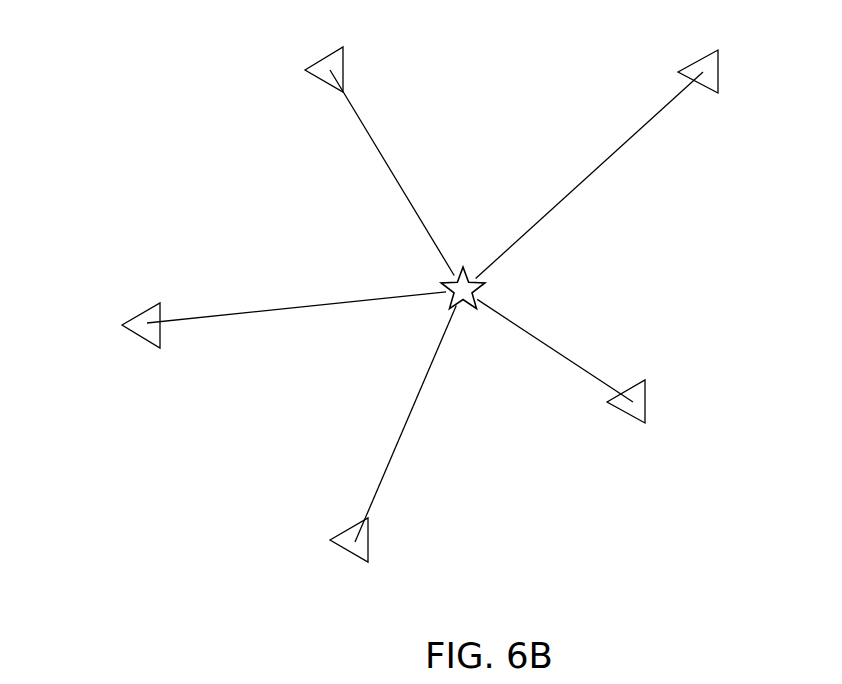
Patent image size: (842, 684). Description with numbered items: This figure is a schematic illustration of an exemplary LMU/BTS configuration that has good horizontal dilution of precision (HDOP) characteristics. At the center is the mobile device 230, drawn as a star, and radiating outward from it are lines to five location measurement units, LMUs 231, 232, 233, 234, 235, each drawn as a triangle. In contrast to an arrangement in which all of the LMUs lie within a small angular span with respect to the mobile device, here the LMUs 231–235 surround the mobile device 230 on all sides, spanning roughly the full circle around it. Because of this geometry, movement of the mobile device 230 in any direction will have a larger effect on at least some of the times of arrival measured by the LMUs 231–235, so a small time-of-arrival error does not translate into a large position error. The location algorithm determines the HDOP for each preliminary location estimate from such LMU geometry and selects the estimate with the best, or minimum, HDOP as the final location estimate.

The mobile device 230 is at (446, 282).
The LMU 231 is at (645, 423).
The LMU 232 is at (718, 50).
The LMU 233 is at (343, 47).
The LMU 234 is at (122, 325).
The LMU 235 is at (330, 540).